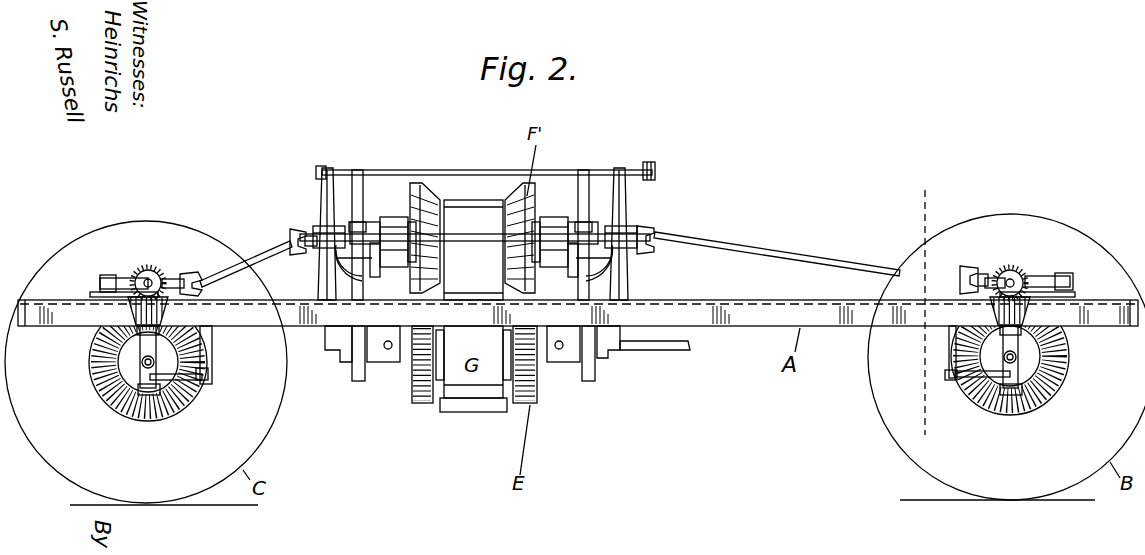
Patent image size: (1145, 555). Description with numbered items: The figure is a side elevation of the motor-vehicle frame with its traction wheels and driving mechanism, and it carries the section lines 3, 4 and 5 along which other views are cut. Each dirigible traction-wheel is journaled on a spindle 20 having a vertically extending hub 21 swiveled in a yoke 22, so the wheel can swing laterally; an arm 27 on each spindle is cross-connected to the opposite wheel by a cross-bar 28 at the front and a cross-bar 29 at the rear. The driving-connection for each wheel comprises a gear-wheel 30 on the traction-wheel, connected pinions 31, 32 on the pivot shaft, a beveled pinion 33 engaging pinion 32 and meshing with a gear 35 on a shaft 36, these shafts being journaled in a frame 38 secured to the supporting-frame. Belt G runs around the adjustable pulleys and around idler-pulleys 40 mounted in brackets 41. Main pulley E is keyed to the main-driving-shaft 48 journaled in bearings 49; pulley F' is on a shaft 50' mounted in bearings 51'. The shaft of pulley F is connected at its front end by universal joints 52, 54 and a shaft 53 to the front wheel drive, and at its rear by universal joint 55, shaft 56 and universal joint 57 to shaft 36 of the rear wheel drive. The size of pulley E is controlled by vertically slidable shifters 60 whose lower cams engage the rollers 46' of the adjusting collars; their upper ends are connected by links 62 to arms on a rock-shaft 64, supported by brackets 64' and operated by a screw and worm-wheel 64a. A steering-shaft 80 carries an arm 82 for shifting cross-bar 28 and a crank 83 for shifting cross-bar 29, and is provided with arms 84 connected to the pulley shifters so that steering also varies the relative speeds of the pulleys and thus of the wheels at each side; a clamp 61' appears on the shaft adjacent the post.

The section line 3 is at (275, 240).
The section line 4 is at (590, 190).
The section line 5 is at (916, 432).
The spindle 20 is at (142, 365).
The hub 21 is at (140, 352).
The yoke 22 is at (150, 398).
The arm 27 is at (190, 412).
The cross-bar 28 is at (956, 374).
The cross-bar 29 is at (205, 377).
The gear-wheel 30 is at (118, 412).
The pinion 31 is at (128, 306).
The pinion 32 is at (168, 305).
The beveled pinion 33 is at (150, 268).
The gear 35 is at (132, 275).
The shaft 36 is at (160, 276).
The frame 38 is at (100, 282).
The idler-pulley 40 is at (440, 412).
The bracket 41 is at (416, 188).
The roller 46' is at (473, 371).
The main-driving-shaft 48 is at (690, 347).
The bearing 49 is at (332, 362).
The shaft 50' is at (474, 197).
The bearing 51' is at (651, 217).
The universal joint 52 is at (652, 247).
The shaft 53 is at (780, 252).
The universal joint 54 is at (962, 274).
The universal joint 55 is at (298, 254).
The shaft 56 is at (550, 238).
The universal joint 57 is at (193, 274).
The shifter 60 is at (356, 382).
The clamp 61' is at (308, 201).
The link 62 is at (356, 200).
The rock-shaft 64 is at (489, 168).
The bracket 64' is at (464, 215).
The screw and worm-wheel 64a is at (660, 168).
The steering-shaft 80 is at (740, 300).
The arm 82 is at (950, 348).
The crank 83 is at (213, 352).
The arm 84 is at (366, 284).